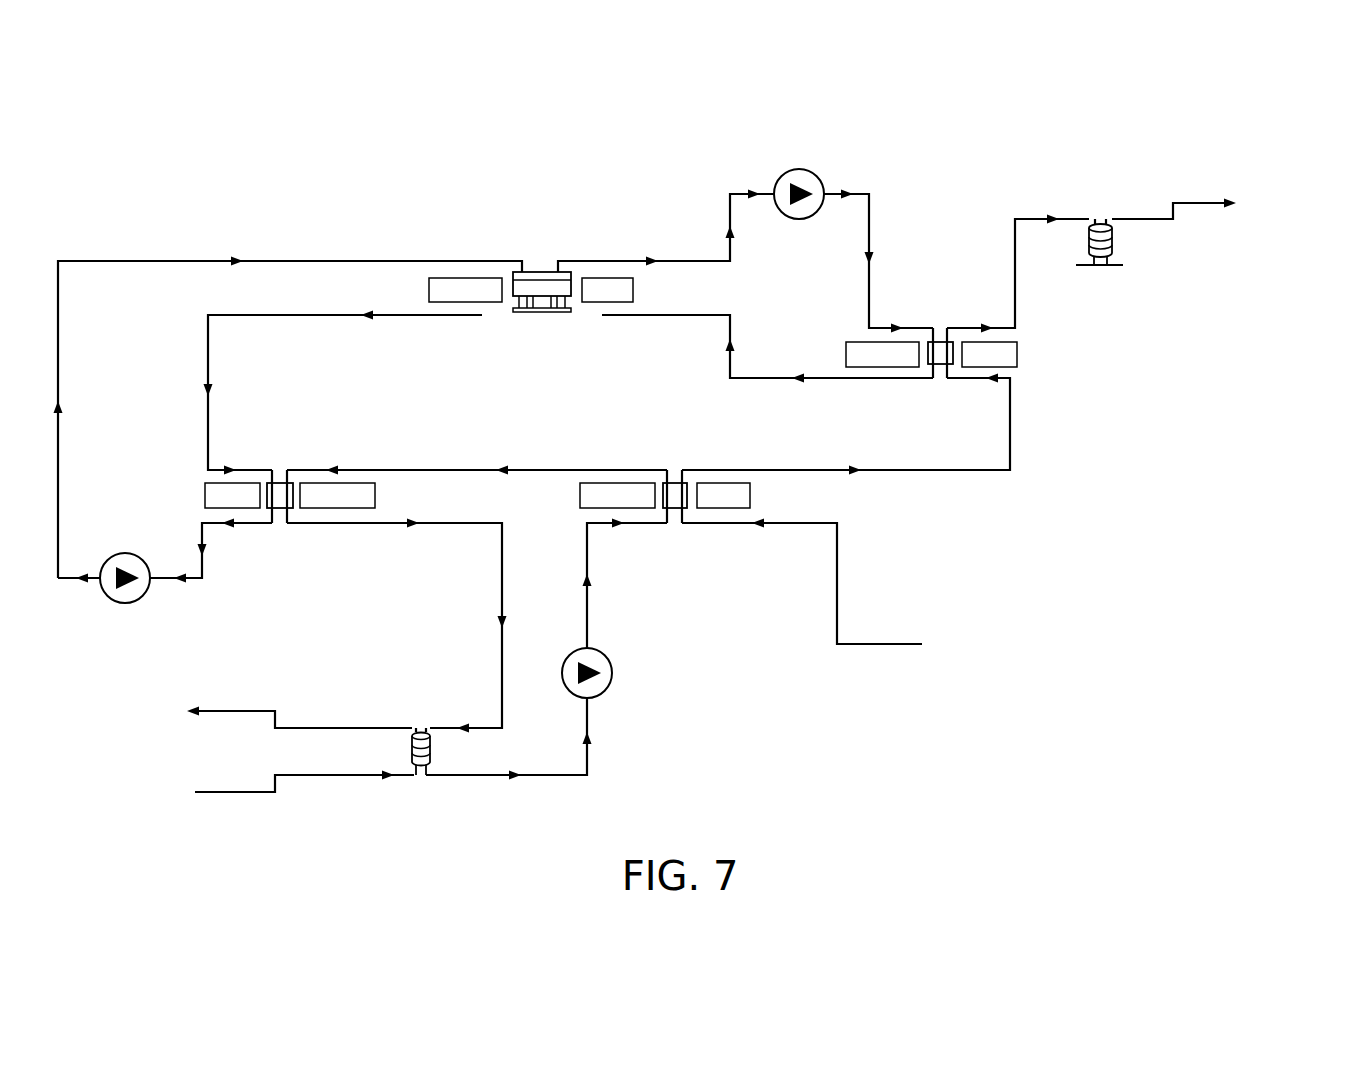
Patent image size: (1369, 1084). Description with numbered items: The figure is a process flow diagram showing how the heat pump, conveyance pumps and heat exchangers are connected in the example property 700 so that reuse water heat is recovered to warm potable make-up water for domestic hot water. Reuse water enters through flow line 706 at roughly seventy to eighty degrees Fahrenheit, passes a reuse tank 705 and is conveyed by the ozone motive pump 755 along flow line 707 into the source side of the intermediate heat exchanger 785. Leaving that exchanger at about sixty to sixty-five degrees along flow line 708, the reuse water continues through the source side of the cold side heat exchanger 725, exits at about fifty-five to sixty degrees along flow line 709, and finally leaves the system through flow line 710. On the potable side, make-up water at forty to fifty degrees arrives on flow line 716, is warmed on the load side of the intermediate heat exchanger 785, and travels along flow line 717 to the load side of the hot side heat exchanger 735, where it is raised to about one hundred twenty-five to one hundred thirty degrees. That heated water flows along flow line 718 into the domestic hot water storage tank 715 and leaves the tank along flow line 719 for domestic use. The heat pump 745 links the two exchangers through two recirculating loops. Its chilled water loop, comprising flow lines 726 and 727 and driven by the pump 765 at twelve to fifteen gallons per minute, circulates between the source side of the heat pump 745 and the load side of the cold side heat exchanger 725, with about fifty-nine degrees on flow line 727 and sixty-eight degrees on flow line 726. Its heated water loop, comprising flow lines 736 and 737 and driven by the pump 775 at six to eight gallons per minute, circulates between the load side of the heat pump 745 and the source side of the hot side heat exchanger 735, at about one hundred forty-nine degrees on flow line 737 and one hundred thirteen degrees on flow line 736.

The example property 700 is at (1080, 720).
The reuse tank 705 is at (415, 805).
The flow line 706 is at (316, 775).
The flow line 707 is at (587, 778).
The flow line 708 is at (548, 470).
The flow line 709 is at (502, 710).
The flow line 710 is at (314, 728).
The domestic hot water storage tank 715 is at (1098, 222).
The flow line 716 is at (878, 644).
The flow line 717 is at (1010, 470).
The flow line 718 is at (1015, 310).
The flow line 719 is at (1183, 203).
The cold side heat exchanger 725 is at (278, 483).
The flow line 726 is at (118, 262).
The flow line 727 is at (208, 404).
The hot side heat exchanger 735 is at (937, 342).
The flow line 736 is at (729, 366).
The flow line 737 is at (729, 216).
The heat pump 745 is at (539, 272).
The ozone motive pump 755 is at (605, 655).
The pump 765 is at (125, 553).
The pump 775 is at (817, 177).
The intermediate heat exchanger 785 is at (674, 483).